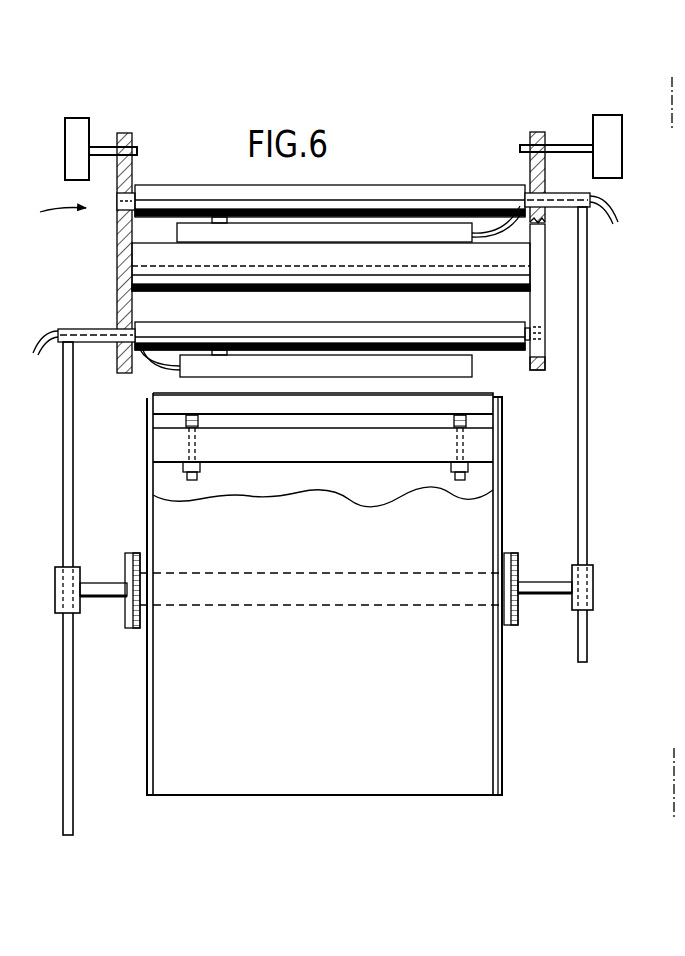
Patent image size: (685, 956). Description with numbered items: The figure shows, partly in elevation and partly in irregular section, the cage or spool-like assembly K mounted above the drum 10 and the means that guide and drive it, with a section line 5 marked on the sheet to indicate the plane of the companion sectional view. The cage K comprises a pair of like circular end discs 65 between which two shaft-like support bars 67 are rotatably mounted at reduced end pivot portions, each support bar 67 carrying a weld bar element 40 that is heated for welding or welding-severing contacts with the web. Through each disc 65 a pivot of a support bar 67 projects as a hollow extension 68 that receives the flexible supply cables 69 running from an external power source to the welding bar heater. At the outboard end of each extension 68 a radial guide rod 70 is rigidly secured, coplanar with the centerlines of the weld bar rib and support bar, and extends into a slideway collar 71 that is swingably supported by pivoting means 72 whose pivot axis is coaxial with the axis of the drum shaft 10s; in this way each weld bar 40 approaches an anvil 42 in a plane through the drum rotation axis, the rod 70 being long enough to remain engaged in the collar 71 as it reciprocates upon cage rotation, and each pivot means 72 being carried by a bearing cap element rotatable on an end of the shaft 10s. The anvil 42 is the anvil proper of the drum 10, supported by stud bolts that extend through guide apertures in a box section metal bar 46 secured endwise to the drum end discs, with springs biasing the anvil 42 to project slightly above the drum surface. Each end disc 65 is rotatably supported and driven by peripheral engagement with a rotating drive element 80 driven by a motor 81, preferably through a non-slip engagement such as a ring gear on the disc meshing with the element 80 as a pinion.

The line 5-5 section indicator 5 is at (670, 88).
The cage or spool-like assembly K is at (51, 212).
The drum 10 is at (506, 685).
The drum shaft 10s is at (335, 577).
The weld bar element 40 is at (453, 233).
The bar element (anvil proper) 42 is at (468, 399).
The box section metal bar 46 is at (386, 449).
The circular end disc 65 is at (117, 260).
The shaft-like support bar 67 is at (412, 192).
The hollow extension 68 is at (100, 328).
The flexible supply cable 69 is at (633, 210).
The radial guide rod 70 is at (63, 448).
The slideway collar 71 is at (60, 570).
The pivoting means 72 is at (105, 590).
The rotating drive element 80 is at (128, 142).
The motor 81 is at (70, 138).